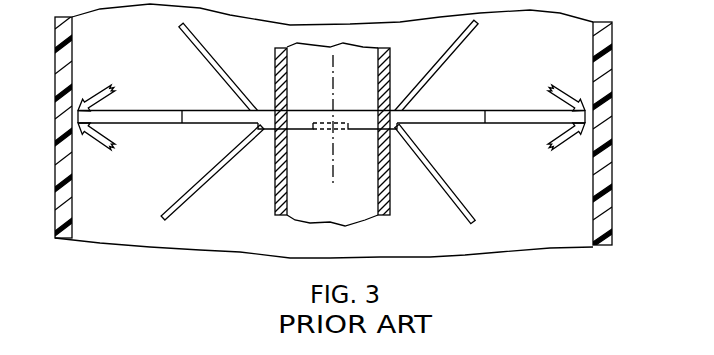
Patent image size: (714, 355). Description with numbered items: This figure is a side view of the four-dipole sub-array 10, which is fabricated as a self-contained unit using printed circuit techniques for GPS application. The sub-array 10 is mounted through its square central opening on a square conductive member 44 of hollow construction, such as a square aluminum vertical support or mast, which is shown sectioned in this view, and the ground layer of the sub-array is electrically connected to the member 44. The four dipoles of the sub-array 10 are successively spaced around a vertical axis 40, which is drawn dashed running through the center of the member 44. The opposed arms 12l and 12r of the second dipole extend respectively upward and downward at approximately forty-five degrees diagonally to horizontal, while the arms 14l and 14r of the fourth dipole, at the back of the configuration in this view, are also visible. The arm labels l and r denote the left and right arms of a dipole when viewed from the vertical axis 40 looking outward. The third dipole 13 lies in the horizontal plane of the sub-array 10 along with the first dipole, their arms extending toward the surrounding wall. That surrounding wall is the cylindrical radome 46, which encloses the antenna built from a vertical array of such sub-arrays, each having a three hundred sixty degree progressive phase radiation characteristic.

The four-dipole sub-array 10 is at (89, 139).
The third dipole 13 is at (571, 94).
The left arm of dipole 12 12l is at (207, 65).
The right arm of dipole 12 12r is at (445, 179).
The left arm of dipole 14 14l is at (201, 178).
The right arm of dipole 14 14r is at (450, 64).
The vertical axis 40 is at (333, 181).
The square conductive member 44 is at (274, 198).
The cylindrical radome 46 is at (54, 60).